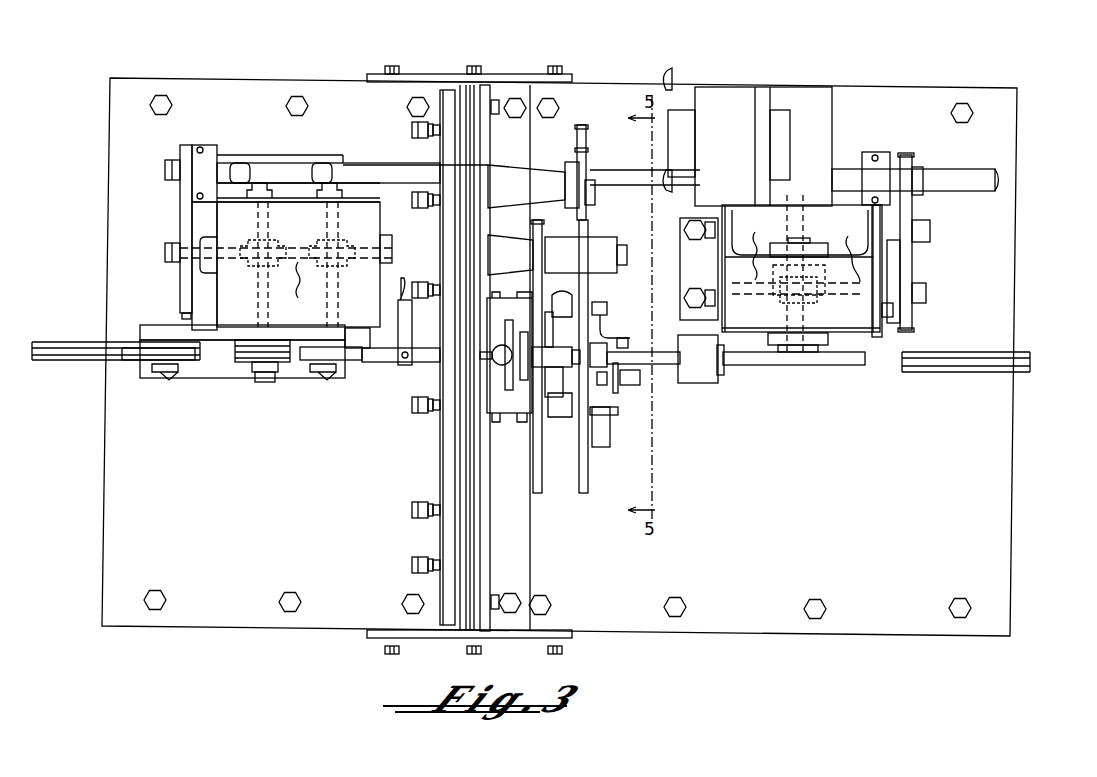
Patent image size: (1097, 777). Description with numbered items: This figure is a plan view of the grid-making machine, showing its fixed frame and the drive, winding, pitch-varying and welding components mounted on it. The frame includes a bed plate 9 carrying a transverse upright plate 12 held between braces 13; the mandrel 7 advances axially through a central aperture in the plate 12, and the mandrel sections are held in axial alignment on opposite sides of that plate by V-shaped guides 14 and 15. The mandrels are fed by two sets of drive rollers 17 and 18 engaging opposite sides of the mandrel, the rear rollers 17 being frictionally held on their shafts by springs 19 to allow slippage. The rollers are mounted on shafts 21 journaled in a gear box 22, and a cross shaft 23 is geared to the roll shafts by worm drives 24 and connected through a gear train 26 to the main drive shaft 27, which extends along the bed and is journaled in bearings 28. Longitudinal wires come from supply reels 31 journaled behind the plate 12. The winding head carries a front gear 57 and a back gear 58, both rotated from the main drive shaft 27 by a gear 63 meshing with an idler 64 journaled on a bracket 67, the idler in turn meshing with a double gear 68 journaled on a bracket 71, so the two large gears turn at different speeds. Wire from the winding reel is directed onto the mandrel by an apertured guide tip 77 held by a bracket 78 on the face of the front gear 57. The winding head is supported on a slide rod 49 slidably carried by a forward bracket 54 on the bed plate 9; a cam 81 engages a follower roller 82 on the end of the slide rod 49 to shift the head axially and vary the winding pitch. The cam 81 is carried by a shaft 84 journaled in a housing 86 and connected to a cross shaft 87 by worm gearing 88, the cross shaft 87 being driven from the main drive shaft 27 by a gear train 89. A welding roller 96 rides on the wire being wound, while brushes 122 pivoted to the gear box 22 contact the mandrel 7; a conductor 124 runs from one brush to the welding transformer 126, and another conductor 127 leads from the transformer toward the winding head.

The mandrel 7 is at (135, 365).
The bed plate 9 is at (1000, 506).
The transverse upright plate 12 is at (466, 558).
The braces 13 is at (540, 72).
The V-shaped guide 14 is at (55, 362).
The V-shaped guide 15 is at (1005, 355).
The drive rollers 17 is at (238, 360).
The drive rollers 18 is at (350, 362).
The springs 19 is at (278, 385).
The shafts 21 is at (269, 302).
The gear box 22 is at (230, 217).
The cross shaft 23 is at (299, 288).
The worm drives 24 is at (355, 240).
The gear train 26 is at (180, 200).
The main drive shaft 27 is at (385, 165).
The bearings 28 is at (205, 165).
The supply rolls or reels 31 is at (442, 478).
The slide rod 49 is at (665, 358).
The forward bracket 54 is at (703, 365).
The front gear 57 is at (588, 476).
The back gear 58 is at (543, 477).
The gear 63 is at (585, 130).
The idler 64 is at (588, 172).
The bracket 67 is at (525, 182).
The double gear 68 is at (608, 245).
The bracket 71 is at (508, 240).
The apertured guide tip 77 is at (625, 338).
The bracket 78 is at (612, 310).
The cam 81 is at (838, 365).
The follower roller 82 is at (724, 365).
The shaft 84 is at (788, 312).
The housing 86 is at (860, 318).
The cross shaft 87 is at (846, 246).
The worm gearing 88 is at (753, 245).
The gear train 89 is at (905, 282).
The welding electrode or roller 96 is at (628, 385).
The brushes 122 is at (390, 362).
The conductor 124 is at (408, 285).
The welding transformer 126 is at (745, 95).
The conductor 127 is at (668, 225).